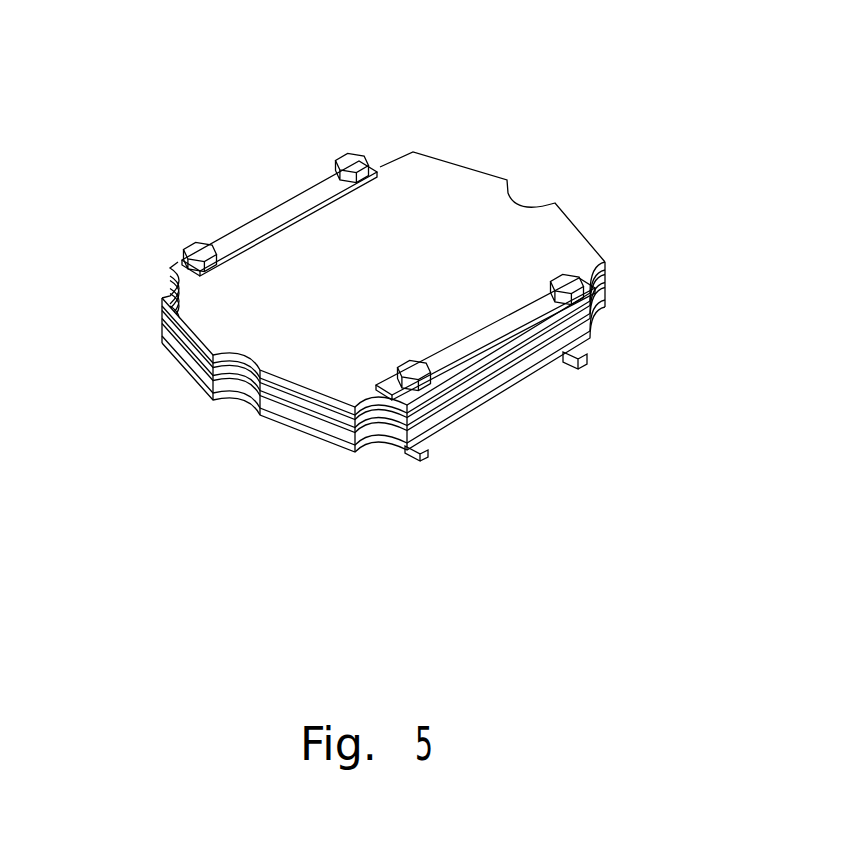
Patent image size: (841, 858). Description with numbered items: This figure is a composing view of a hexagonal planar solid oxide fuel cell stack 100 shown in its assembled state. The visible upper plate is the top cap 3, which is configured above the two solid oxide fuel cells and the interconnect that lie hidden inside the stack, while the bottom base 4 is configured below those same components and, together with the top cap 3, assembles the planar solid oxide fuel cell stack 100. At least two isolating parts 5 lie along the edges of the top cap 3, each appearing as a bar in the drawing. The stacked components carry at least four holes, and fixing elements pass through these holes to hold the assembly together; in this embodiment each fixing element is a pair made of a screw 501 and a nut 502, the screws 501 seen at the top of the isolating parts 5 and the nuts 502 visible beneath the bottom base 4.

The planar solid oxide fuel cell stack 100 is at (510, 57).
The top cap 3 is at (541, 247).
The bottom base 4 is at (497, 403).
The isolating part 5 is at (273, 212).
The screw 501 is at (187, 247).
The nut 502 is at (418, 457).